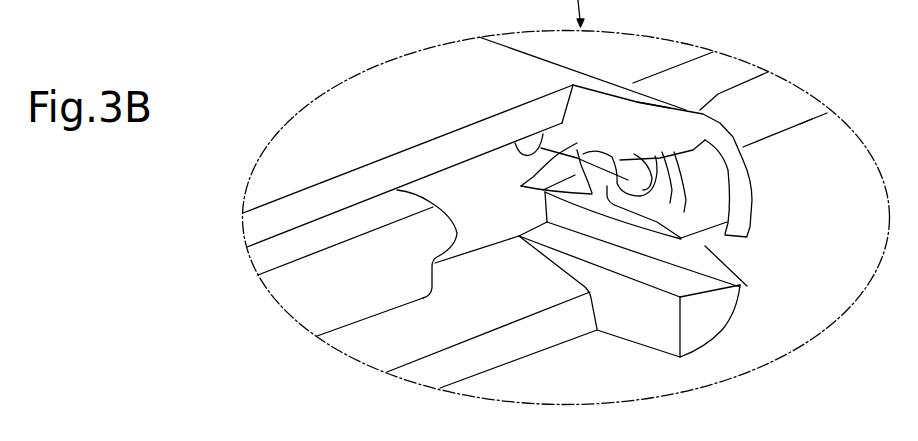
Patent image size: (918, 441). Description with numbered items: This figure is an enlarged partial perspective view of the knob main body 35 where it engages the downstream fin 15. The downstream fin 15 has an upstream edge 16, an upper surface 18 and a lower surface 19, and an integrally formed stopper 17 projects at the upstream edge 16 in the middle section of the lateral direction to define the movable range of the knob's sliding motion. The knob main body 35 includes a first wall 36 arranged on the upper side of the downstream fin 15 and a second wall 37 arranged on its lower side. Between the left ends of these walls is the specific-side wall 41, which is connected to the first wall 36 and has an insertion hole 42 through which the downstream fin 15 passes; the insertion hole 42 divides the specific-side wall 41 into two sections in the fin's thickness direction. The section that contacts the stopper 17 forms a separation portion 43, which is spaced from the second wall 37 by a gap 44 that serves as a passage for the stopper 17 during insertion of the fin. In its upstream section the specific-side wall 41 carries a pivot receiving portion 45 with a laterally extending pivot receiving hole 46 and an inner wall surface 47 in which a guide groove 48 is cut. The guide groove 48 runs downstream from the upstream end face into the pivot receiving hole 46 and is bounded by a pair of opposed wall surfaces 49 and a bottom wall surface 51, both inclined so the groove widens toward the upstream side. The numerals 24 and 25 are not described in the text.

The downstream fin 15 is at (637, 47).
The upstream edge 16 is at (780, 130).
The stopper 17 is at (386, 304).
The upper surface 18 is at (672, 44).
The lower surface 19 is at (812, 119).
The rail portion 24 is at (98, 12).
The rail portion 25 is at (191, 15).
The knob main body 35 is at (296, 139).
The first wall 36 is at (257, 161).
The second wall 37 is at (505, 357).
The specific-side wall 41 is at (740, 296).
The insertion hole 42 is at (514, 142).
The separation portion 43 is at (737, 233).
The gap 44 is at (736, 250).
The pivot receiving portion 45 is at (649, 103).
The pivot receiving hole 46 is at (630, 165).
The inner wall surface 47 is at (515, 185).
The guide groove 48 is at (713, 188).
The opposed wall surfaces 49 is at (703, 150).
The bottom wall surface 51 is at (687, 235).